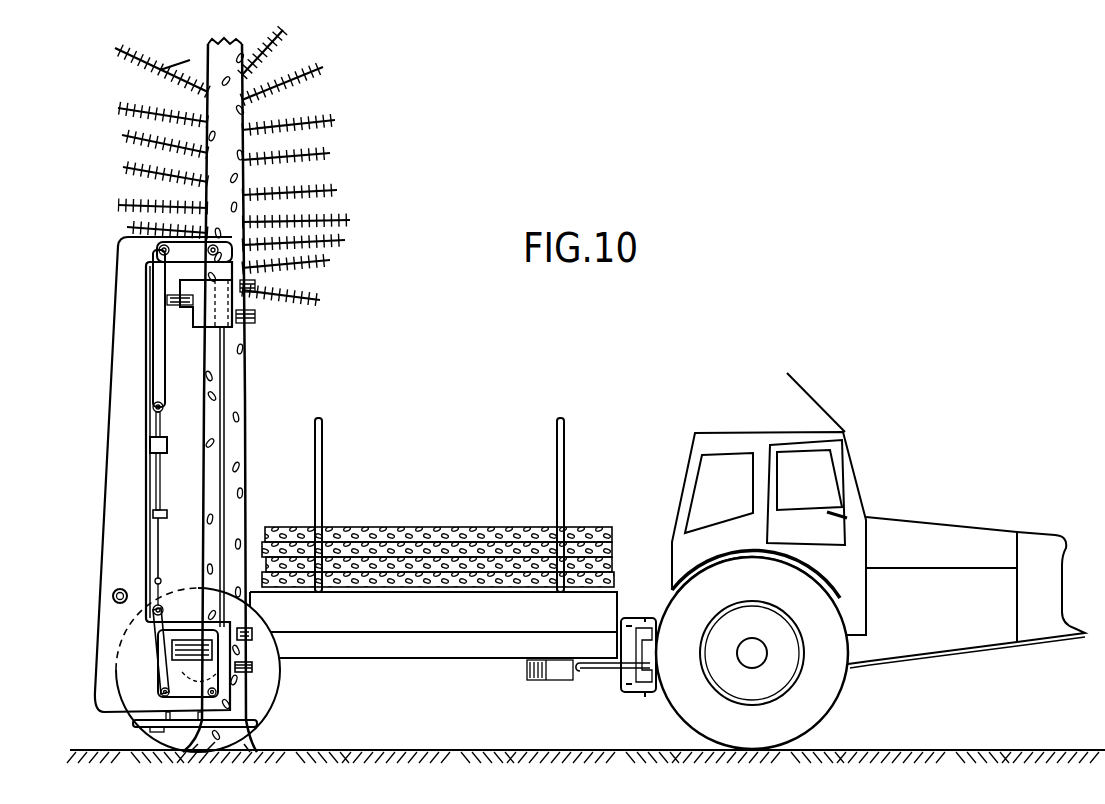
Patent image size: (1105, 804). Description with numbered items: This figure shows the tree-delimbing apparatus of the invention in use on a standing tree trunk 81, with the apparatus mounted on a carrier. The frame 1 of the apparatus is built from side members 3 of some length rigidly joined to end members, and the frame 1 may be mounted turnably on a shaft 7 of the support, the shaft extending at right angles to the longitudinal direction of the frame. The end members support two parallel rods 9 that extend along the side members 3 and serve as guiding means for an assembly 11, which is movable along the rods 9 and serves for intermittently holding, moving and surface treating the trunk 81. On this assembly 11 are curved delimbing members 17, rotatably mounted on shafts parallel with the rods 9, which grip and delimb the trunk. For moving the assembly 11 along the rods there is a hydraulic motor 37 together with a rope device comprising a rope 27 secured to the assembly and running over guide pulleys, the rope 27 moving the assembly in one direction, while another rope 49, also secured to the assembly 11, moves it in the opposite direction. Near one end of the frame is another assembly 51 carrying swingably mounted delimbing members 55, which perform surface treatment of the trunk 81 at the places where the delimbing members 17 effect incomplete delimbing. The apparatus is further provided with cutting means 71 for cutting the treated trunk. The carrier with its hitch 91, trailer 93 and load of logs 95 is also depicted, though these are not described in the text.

The frame 1 is at (97, 712).
The side members 3 is at (112, 542).
The shaft 7 is at (112, 596).
The rods 9 is at (228, 466).
The assembly 11 is at (192, 322).
The delimbing members 17 is at (250, 302).
The rope 27 is at (152, 388).
The hydraulic motor 37 is at (157, 495).
The rope 49 is at (183, 658).
The assembly 51 is at (162, 632).
The delimbing members 55 is at (252, 662).
The cutting means 71 is at (180, 728).
The trunk 81 is at (240, 373).
The hitch 91 is at (658, 607).
The trailer 93 is at (463, 640).
The log bunk 95 is at (407, 592).